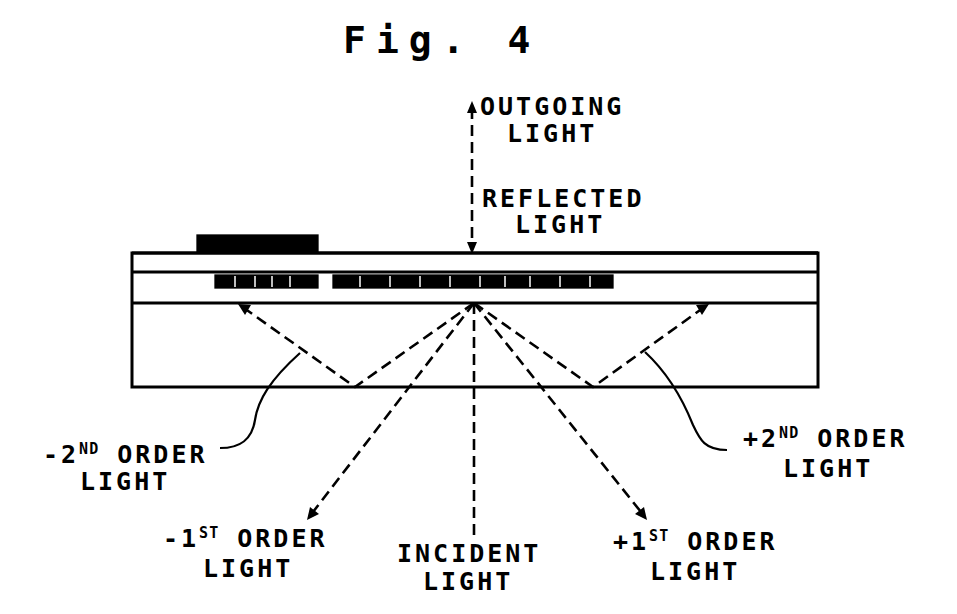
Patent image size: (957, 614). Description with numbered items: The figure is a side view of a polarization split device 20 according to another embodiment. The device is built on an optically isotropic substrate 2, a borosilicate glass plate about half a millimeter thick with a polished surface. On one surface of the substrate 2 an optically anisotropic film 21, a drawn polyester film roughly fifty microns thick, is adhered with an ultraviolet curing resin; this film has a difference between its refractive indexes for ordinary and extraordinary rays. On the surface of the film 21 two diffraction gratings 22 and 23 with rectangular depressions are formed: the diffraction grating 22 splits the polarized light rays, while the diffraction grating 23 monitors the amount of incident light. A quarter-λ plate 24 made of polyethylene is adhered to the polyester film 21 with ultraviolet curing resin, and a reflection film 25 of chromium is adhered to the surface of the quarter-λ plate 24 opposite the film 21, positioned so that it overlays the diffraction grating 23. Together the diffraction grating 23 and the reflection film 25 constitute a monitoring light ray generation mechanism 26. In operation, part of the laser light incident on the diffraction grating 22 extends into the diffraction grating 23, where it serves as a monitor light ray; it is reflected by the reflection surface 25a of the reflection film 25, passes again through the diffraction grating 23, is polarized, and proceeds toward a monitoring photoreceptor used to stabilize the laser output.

The optically isotropic substrate 2 is at (147, 358).
The polarization split device 20 is at (845, 291).
The optically anisotropic film 21 is at (140, 293).
The diffraction grating 22 is at (418, 259).
The diffraction grating 23 is at (213, 282).
The quarter-λ plate 24 is at (717, 253).
The reflection film 25 is at (222, 235).
The reflection surface 25a is at (303, 260).
The monitoring light ray generation mechanism 26 is at (198, 100).